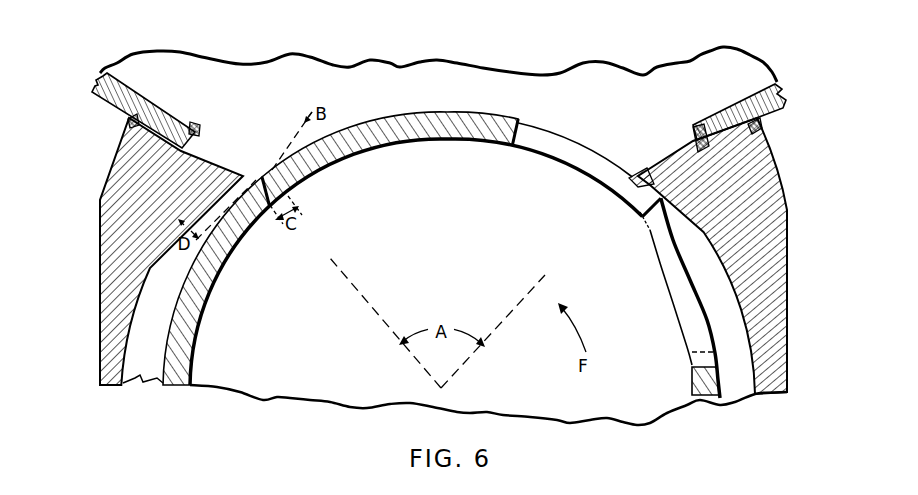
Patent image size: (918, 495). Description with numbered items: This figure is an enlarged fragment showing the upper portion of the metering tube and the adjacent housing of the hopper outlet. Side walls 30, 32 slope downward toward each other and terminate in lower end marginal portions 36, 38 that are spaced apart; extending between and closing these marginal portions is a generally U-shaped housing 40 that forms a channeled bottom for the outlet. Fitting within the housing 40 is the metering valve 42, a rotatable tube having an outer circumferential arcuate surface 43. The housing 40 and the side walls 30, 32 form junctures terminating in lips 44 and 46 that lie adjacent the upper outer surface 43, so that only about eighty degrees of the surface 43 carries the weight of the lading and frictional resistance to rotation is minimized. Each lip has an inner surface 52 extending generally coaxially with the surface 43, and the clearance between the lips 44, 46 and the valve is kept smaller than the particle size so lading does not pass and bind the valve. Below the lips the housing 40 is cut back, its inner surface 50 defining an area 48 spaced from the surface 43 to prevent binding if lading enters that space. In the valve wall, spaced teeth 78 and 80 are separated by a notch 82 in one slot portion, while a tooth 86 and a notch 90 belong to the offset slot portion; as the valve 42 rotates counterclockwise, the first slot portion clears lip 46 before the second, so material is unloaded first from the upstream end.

The side wall 30 is at (128, 89).
The side wall 32 is at (751, 90).
The lower end marginal portion 36 is at (195, 123).
The lower end marginal portion 38 is at (705, 128).
The U-shaped housing 40 is at (97, 313).
The metering valve 42 is at (205, 335).
The outer circumferential arcuate surface 43 is at (441, 111).
The lip 44 is at (250, 178).
The lip 46 is at (637, 175).
The area 48 is at (160, 294).
The inner surface 50 is at (147, 371).
The inner surface 52 is at (268, 183).
The tooth 78 is at (636, 212).
The tooth 80 is at (706, 371).
The notch 82 is at (521, 121).
The tooth 86 is at (697, 352).
The notch 90 is at (652, 232).